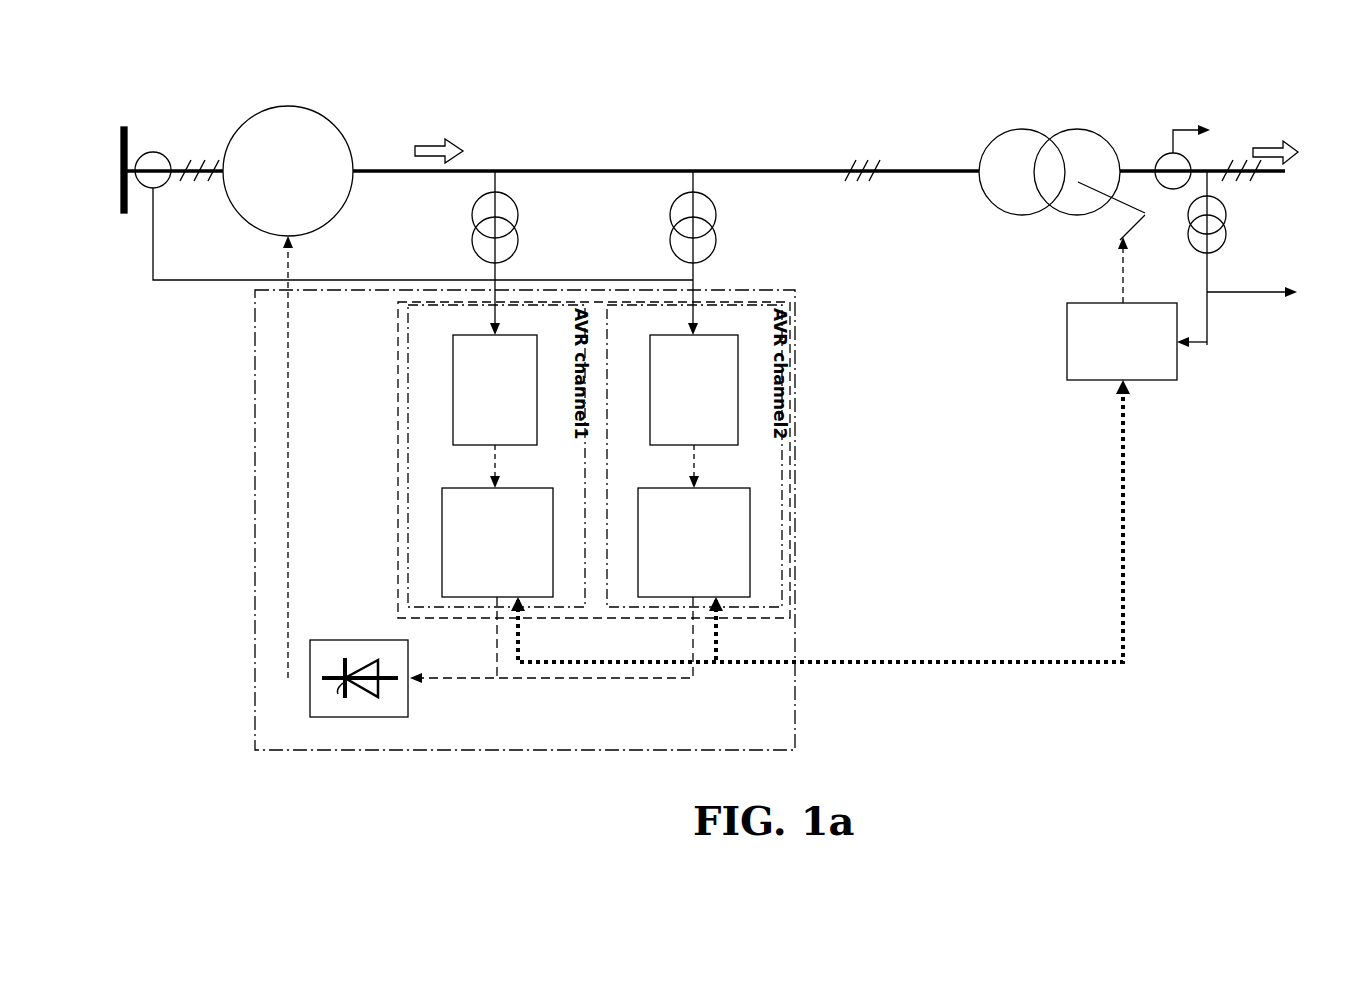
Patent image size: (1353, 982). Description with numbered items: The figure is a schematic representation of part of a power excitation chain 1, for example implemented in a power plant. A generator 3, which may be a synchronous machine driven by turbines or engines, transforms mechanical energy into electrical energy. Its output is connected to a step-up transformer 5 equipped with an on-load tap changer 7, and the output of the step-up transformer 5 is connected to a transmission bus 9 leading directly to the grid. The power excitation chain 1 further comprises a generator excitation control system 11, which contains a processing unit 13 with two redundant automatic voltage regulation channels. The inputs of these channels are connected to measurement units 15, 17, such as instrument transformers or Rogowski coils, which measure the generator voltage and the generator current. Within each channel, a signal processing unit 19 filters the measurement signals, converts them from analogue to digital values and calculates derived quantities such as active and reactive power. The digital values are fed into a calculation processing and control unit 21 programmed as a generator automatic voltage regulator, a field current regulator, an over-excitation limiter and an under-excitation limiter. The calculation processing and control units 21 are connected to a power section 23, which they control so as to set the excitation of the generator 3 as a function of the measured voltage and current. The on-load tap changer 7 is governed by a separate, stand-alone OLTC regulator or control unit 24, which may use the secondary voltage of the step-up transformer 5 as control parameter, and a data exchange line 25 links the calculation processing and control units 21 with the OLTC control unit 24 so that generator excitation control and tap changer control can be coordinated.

The power excitation chain 1 is at (754, 120).
The generator 3 is at (295, 107).
The step-up transformer 5 is at (1037, 127).
The on-load tap changer 7 is at (1107, 210).
The transmission bus 9 is at (1280, 182).
The generator excitation control system 11 is at (800, 708).
The processing unit 13 is at (793, 603).
The measurement unit 15 is at (680, 217).
The measurement unit 17 is at (147, 193).
The signal processing unit 19 is at (595, 411).
The calculation processing and control unit 21 is at (445, 527).
The power section 23 is at (352, 718).
The OLTC regulator or control unit 24 is at (1090, 342).
The data exchange line 25 is at (1120, 507).